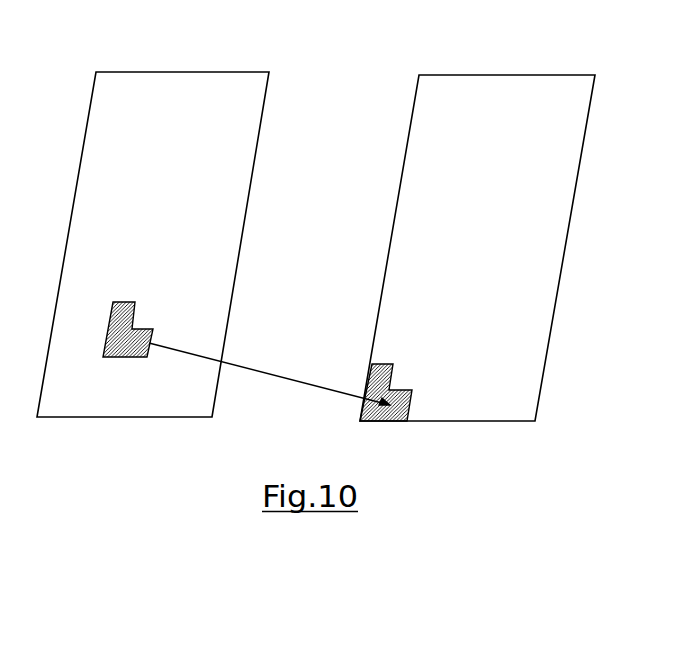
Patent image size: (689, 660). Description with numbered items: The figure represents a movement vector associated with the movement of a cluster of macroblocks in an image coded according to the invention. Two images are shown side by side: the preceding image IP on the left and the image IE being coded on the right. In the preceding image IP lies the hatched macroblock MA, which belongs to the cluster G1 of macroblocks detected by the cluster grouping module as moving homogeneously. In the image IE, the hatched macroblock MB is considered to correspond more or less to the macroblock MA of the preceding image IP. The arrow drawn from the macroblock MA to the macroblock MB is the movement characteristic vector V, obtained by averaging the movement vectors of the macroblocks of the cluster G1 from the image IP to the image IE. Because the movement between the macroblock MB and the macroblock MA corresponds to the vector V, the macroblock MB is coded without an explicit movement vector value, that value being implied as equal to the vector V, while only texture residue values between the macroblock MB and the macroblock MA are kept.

The preceding image IP is at (184, 72).
The image IE is at (533, 75).
The cluster G1 is at (135, 302).
The macroblock MA is at (136, 357).
The macroblock MB is at (400, 390).
The movement characteristic vector V is at (280, 372).